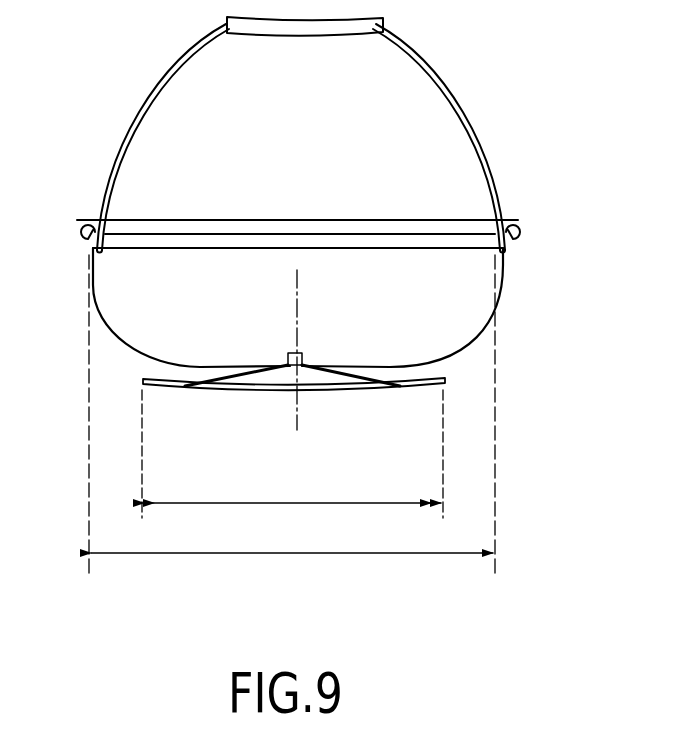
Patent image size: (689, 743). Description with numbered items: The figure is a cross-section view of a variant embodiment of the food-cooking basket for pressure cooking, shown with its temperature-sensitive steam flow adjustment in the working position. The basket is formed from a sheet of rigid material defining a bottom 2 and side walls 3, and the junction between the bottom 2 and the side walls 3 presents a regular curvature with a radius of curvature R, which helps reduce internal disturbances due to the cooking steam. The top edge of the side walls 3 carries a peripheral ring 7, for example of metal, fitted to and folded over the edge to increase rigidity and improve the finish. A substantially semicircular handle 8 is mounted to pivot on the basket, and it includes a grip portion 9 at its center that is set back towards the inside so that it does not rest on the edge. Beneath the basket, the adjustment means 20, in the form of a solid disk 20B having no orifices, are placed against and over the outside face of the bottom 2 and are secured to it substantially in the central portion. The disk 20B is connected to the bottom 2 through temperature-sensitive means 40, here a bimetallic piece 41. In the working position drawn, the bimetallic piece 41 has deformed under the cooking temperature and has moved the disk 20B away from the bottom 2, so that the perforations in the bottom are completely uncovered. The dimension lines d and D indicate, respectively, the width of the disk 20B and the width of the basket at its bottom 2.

The bottom 2 is at (393, 366).
The side walls 3 is at (498, 296).
The peripheral ring 7 is at (512, 222).
The handle 8 is at (466, 90).
The grip portion 9 is at (271, 30).
The adjustment means 20 is at (170, 392).
The disk 20B is at (388, 388).
The temperature-sensitive means 40 is at (314, 371).
The bimetallic piece 41 is at (252, 384).
The radius of curvature R is at (118, 336).
The plate diameter d is at (292, 454).
The vessel diameter D is at (292, 416).